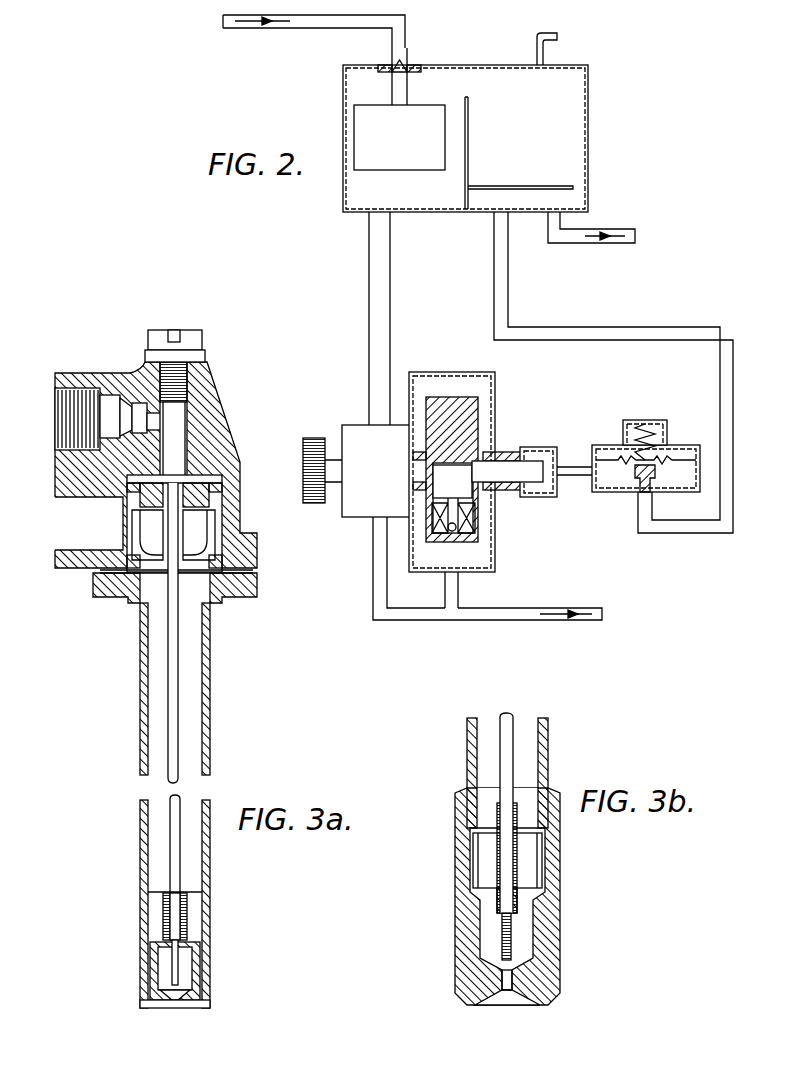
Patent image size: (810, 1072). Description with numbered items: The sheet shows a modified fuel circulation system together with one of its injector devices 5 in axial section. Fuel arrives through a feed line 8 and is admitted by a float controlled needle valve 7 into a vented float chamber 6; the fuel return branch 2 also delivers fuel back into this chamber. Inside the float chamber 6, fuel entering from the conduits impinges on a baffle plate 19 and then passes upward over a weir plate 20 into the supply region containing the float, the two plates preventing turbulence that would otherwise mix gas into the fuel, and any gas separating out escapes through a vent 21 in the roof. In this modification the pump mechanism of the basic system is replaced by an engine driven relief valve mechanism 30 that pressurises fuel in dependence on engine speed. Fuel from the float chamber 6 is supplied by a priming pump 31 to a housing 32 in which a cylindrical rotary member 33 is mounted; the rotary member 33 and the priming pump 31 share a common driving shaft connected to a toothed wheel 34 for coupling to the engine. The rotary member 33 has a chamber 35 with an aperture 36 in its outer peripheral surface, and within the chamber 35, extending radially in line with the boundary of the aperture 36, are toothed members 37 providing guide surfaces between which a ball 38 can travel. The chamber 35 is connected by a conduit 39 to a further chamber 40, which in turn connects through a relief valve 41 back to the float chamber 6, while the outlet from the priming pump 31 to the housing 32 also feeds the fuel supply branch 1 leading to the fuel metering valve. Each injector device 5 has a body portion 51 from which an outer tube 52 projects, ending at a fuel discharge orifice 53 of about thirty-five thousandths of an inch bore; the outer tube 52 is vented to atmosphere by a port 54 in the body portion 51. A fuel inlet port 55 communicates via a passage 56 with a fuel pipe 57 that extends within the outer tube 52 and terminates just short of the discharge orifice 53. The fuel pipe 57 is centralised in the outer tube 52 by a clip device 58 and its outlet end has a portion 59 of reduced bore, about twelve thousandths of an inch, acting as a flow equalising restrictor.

In FIG. 2, the fuel supply branch 1 is at (495, 620).
In FIG. 2, the fuel return branch 2 is at (600, 229).
In FIG. 3A, the fuel injector device 5 is at (161, 468).
In FIG. 2, the float chamber 6 is at (588, 95).
In FIG. 2, the float controlled needle valve 7 is at (403, 95).
In FIG. 2, the feed line 8 is at (295, 27).
In FIG. 2, the baffle plate 19 is at (525, 186).
In FIG. 2, the weir plate 20 is at (468, 150).
In FIG. 2, the vent 21 is at (537, 45).
In FIG. 2, the engine driven relief valve mechanism 30 is at (426, 369).
In FIG. 2, the priming pump 31 is at (355, 518).
In FIG. 2, the housing 32 is at (494, 556).
In FIG. 2, the cylindrical rotary member 33 is at (458, 395).
In FIG. 2, the toothed wheel 34 is at (314, 504).
In FIG. 2, the chamber 35 is at (440, 475).
In FIG. 2, the aperture 36 is at (453, 538).
In FIG. 2, the toothed members 37 is at (466, 510).
In FIG. 2, the ball 38 is at (457, 530).
In FIG. 2, the conduit 39 is at (503, 455).
In FIG. 2, the chamber 40 is at (548, 497).
In FIG. 2, the relief valve 41 is at (667, 432).
In FIG. 3A, the body portion 51 is at (217, 440).
In FIG. 3A, the outer tube 52 is at (208, 732).
In FIG. 3B, the outer tube 52 is at (546, 765).
In FIG. 3A, the fuel discharge orifice 53 is at (178, 1000).
In FIG. 3B, the fuel discharge orifice 53 is at (508, 980).
In FIG. 3A, the port 54 is at (77, 535).
In FIG. 3A, the fuel inlet port 55 is at (85, 392).
In FIG. 3A, the passage 56 is at (176, 430).
In FIG. 3A, the fuel pipe 57 is at (175, 622).
In FIG. 3B, the fuel pipe 57 is at (505, 745).
In FIG. 3A, the clip device 58 is at (193, 917).
In FIG. 3B, the clip device 58 is at (530, 862).
In FIG. 3A, the portion of reduced bore diameter 59 is at (176, 965).
In FIG. 3B, the portion of reduced bore diameter 59 is at (508, 917).